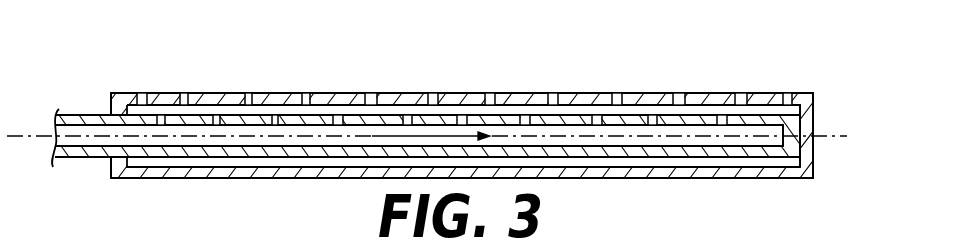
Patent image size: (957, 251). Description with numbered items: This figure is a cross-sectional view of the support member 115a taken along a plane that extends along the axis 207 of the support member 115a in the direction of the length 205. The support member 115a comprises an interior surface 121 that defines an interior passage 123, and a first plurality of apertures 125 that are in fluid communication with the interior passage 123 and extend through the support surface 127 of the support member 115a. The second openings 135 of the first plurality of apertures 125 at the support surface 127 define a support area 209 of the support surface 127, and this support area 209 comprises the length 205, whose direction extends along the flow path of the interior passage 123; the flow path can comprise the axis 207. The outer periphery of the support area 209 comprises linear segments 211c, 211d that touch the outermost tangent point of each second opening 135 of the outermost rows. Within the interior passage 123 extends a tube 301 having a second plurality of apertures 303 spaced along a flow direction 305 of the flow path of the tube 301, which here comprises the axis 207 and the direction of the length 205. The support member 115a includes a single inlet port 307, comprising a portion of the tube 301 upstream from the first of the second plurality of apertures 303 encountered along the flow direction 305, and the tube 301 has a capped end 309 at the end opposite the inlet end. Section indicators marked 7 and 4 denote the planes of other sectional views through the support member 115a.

The length 205 is at (790, 70).
The linear segment 211c is at (137, 92).
The linear segment 211d is at (790, 92).
The inlet port 307 is at (88, 105).
The tube 301 is at (158, 110).
The second plurality of apertures 303 is at (277, 115).
The support surface 127 is at (353, 94).
The second openings 135 is at (490, 93).
The first plurality of apertures 125 is at (552, 93).
The support area 209 is at (640, 93).
The axis 207 is at (88, 158).
The support member 115a is at (173, 188).
The flow direction 305 is at (398, 135).
The interior surface 121 is at (615, 147).
The interior passage 123 is at (692, 163).
The capped end 309 is at (800, 153).
The section line 7- 7 is at (264, 78).
The section line 4- 4 is at (23, 130).